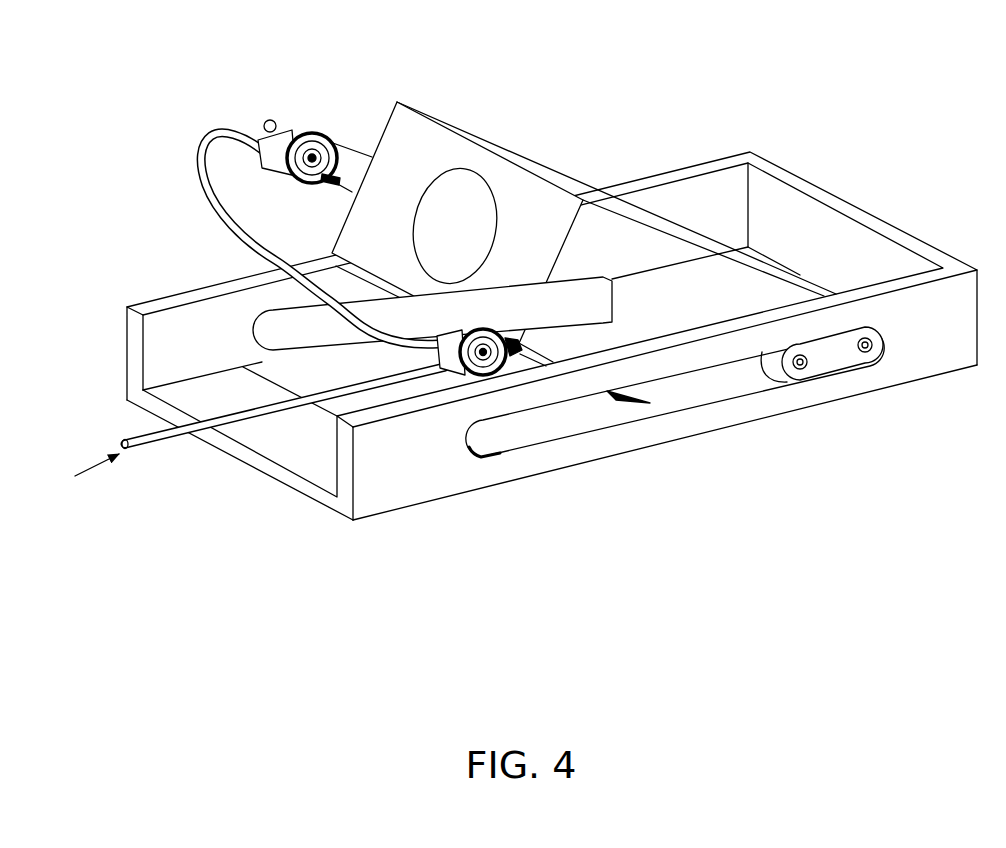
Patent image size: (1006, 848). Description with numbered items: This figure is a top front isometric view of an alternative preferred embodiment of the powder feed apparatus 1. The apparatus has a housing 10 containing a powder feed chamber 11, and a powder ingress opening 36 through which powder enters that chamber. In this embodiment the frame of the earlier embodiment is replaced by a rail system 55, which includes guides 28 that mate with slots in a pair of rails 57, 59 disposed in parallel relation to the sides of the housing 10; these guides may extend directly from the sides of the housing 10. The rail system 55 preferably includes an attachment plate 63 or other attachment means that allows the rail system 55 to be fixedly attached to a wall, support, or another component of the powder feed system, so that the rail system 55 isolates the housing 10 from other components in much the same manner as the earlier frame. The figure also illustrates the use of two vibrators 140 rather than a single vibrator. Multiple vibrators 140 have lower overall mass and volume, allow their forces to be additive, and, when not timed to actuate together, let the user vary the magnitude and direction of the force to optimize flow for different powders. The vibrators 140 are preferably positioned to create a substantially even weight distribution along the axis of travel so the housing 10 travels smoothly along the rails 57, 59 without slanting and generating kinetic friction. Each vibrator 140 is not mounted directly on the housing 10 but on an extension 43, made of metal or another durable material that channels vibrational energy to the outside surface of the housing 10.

The powder feed apparatus 1 is at (604, 84).
The housing 10 is at (594, 187).
The powder feed chamber 11 is at (445, 202).
The powder ingress opening 36 is at (468, 223).
The extension 43 is at (358, 125).
The rail system 55 is at (326, 542).
The rail 57 is at (552, 437).
The rail 59 is at (192, 328).
The attachment plate 63 is at (886, 394).
The guide 28 is at (826, 358).
The vibrator 140 is at (294, 120).